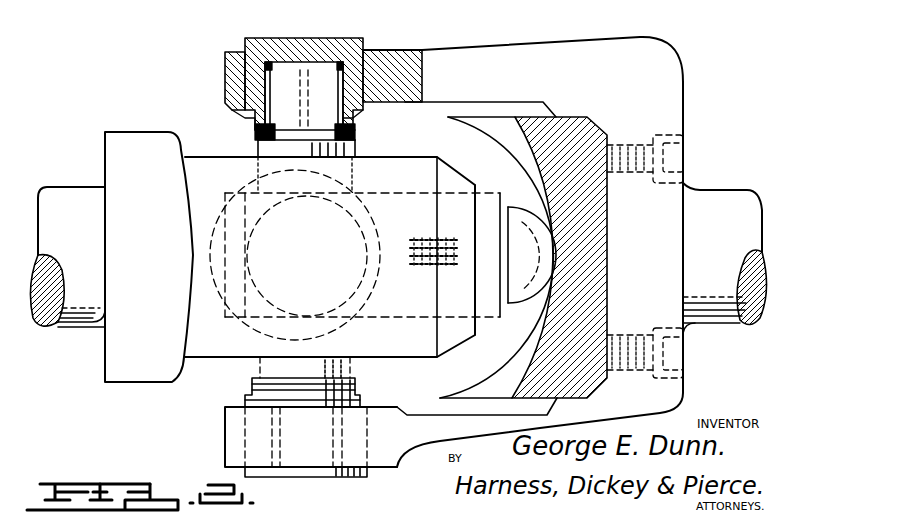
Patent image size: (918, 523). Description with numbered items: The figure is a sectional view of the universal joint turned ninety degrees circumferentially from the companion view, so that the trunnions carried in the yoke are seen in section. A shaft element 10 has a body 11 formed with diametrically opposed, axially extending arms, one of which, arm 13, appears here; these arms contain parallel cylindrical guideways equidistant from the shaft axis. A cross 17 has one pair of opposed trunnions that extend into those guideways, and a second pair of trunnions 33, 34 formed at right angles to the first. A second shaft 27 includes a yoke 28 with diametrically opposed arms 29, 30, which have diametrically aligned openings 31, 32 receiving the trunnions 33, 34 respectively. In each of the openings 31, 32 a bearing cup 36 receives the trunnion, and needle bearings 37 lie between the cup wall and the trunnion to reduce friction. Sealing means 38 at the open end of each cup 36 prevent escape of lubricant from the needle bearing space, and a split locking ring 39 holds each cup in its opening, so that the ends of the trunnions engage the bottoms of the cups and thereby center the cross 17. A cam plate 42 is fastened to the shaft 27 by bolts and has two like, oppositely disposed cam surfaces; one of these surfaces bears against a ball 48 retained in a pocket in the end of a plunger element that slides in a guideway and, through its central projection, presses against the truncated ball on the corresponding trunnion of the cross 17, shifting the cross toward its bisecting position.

The shaft element 10 is at (75, 328).
The body 11 is at (104, 379).
The arm 13 is at (400, 167).
The cross 17 is at (352, 151).
The second shaft 27 is at (716, 192).
The yoke 28 is at (684, 80).
The arm 29 is at (480, 46).
The arm 30 is at (418, 414).
The opening 31 is at (372, 52).
The opening 32 is at (243, 427).
The trunnion 33 is at (333, 60).
The trunnion 34 is at (297, 455).
The bearing cup 36 is at (250, 93).
The needle bearings 37 is at (283, 60).
The sealing means 38 is at (258, 134).
The split locking ring 39 is at (248, 116).
The cam plate 42 is at (595, 236).
The ball 48 is at (556, 262).